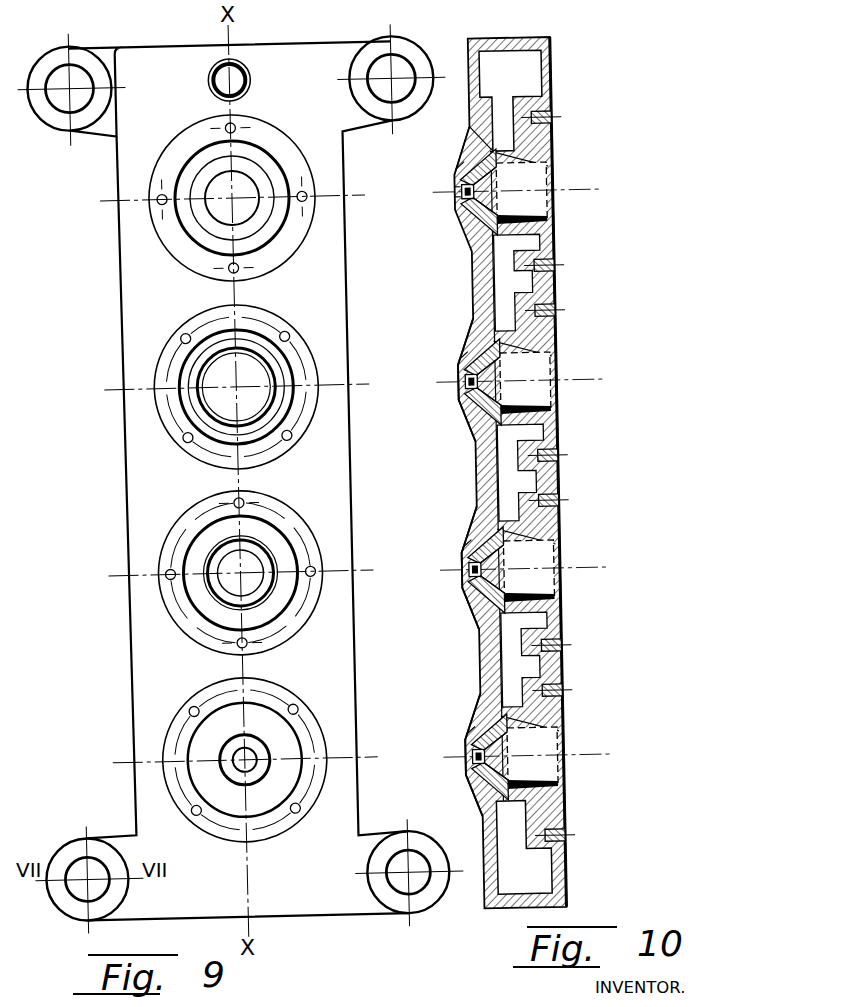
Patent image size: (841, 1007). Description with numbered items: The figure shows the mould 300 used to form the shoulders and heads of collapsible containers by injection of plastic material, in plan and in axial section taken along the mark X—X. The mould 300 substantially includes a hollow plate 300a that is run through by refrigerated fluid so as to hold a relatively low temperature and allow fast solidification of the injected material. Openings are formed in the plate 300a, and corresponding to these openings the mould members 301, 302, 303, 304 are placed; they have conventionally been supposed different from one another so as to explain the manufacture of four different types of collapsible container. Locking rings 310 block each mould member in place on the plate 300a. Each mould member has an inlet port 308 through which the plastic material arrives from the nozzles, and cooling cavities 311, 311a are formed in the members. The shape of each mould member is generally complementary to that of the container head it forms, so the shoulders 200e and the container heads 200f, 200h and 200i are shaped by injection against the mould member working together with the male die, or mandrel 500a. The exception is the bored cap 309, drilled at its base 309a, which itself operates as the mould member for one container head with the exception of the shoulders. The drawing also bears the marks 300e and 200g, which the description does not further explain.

In FIG. 9, the mould 300 is at (150, 491).
In FIG. 10, the mould 300 is at (486, 877).
In FIG. 10, the hollow plate 300a is at (522, 882).
In FIG. 9, the housing hole 300e is at (222, 88).
In FIG. 10, the mould member 301 is at (468, 138).
In FIG. 10, the mould member 302 is at (472, 343).
In FIG. 10, the mould member 303 is at (478, 523).
In FIG. 10, the mould member 304 is at (480, 723).
In FIG. 10, the inlet port 308 is at (452, 199).
In FIG. 10, the bored cap 309 is at (455, 181).
In FIG. 10, the base 309a is at (445, 193).
In FIG. 10, the locking rings 310 is at (550, 118).
In FIG. 10, the cooling cavities 311 is at (470, 232).
In FIG. 10, the cooling cavities 311a is at (480, 606).
In FIG. 10, the shoulders 200e is at (462, 166).
In FIG. 10, the container head 200f is at (460, 213).
In FIG. 10, the nozzle passage 200g is at (468, 387).
In FIG. 10, the container head 200h is at (460, 589).
In FIG. 10, the container head 200i is at (468, 771).
In FIG. 10, the mandrel 500a is at (550, 208).